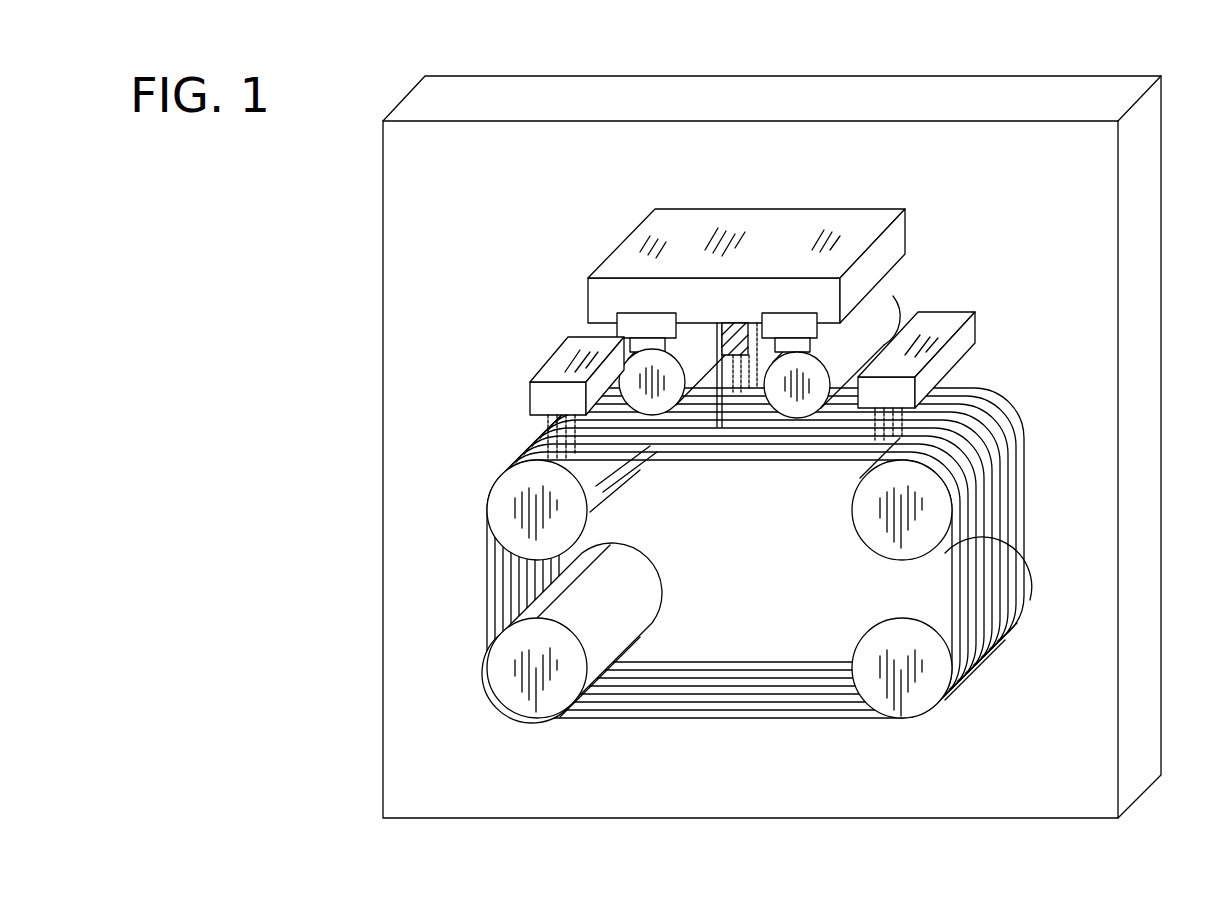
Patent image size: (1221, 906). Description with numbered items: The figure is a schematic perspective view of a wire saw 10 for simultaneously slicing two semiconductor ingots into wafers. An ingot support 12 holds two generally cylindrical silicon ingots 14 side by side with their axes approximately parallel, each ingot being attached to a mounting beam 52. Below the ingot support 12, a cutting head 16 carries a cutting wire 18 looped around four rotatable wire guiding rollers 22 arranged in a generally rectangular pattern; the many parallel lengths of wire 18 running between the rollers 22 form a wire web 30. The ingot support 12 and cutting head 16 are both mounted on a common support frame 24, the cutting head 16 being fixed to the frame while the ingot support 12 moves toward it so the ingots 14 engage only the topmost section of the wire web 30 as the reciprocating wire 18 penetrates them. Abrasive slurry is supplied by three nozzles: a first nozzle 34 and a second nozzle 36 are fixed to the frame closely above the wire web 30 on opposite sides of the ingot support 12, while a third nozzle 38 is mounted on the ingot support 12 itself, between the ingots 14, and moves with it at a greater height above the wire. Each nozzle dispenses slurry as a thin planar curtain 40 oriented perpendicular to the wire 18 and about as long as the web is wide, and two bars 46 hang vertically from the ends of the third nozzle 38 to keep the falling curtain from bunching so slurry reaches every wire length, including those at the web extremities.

The wire saw 10 is at (802, 425).
The ingot support 12 is at (944, 192).
The ingots 14 is at (782, 336).
The cutting head 16 is at (833, 566).
The cutting wire 18 is at (755, 572).
The wire guiding rollers 22 is at (490, 508).
The support frame 24 is at (1075, 175).
The wire web 30 is at (730, 676).
The first nozzle 34 is at (548, 426).
The second nozzle 36 is at (890, 402).
The third nozzle 38 is at (752, 323).
The slurry curtain 40 is at (748, 358).
The bars 46 is at (718, 327).
The mounting beam 52 is at (632, 345).